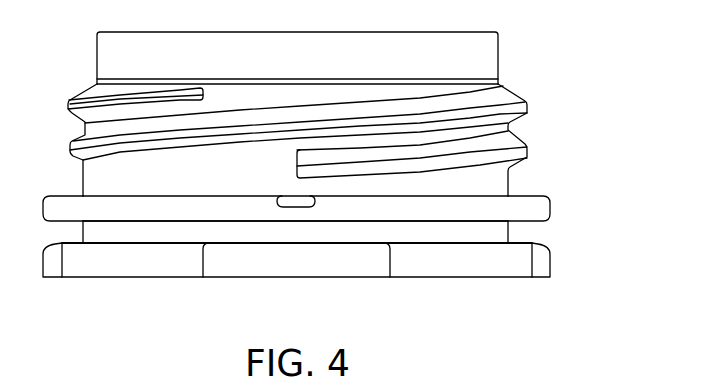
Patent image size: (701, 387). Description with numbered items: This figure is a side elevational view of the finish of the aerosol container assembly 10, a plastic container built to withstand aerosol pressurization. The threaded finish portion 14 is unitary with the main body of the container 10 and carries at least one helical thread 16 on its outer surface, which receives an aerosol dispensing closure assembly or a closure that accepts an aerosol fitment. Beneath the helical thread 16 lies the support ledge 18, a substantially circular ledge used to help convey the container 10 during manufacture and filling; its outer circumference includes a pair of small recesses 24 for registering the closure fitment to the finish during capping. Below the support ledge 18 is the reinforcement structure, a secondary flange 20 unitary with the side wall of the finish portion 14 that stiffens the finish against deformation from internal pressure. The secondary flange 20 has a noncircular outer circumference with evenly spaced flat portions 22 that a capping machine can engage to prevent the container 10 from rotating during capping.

The aerosol container assembly 10 is at (352, 162).
The threaded finish portion 14 is at (353, 42).
The helical thread 16 is at (80, 89).
The support ledge 18 is at (551, 205).
The secondary flange 20 is at (541, 264).
The flat portions 22 is at (345, 263).
The small recesses 24 is at (295, 200).